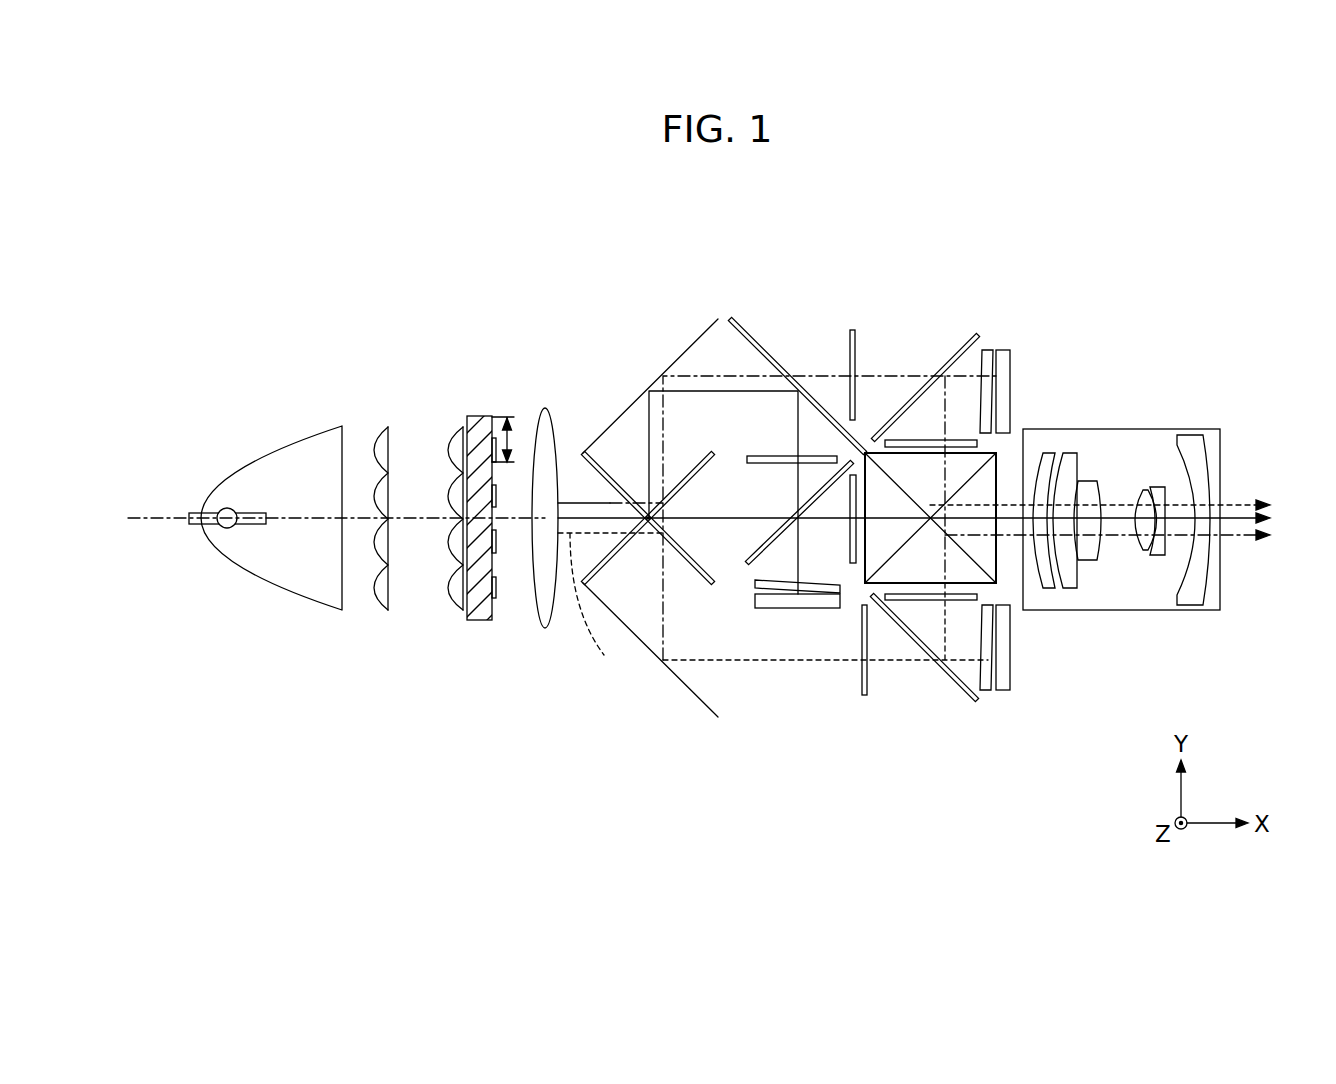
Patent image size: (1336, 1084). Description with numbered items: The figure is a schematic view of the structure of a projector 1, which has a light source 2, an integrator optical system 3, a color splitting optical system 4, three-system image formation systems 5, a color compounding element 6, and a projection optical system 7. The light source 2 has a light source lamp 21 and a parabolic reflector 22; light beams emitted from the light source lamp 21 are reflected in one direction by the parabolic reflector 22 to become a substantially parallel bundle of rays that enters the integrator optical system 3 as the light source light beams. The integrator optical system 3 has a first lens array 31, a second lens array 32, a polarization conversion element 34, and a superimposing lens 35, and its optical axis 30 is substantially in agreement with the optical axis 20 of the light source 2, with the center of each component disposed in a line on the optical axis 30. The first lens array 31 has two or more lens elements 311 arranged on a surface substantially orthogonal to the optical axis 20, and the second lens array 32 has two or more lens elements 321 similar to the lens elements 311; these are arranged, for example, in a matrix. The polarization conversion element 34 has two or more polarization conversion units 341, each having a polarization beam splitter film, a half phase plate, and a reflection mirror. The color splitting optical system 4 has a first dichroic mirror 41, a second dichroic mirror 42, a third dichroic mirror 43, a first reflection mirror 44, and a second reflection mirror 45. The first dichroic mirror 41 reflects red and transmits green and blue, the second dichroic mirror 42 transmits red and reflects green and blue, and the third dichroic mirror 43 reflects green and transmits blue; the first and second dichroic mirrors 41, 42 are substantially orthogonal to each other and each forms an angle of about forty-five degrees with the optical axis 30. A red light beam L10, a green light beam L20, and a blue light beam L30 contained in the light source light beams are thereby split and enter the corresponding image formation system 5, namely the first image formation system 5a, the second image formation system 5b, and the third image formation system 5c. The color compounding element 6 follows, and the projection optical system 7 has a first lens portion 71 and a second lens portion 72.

The projector 1 is at (1098, 235).
The light source 2 is at (265, 514).
The optical axis of the light source 20 is at (155, 512).
The light source lamp 21 is at (226, 525).
The parabolic reflector 22 is at (284, 598).
The integrator optical system 3 is at (452, 524).
The optical axis of the integrator optical system 30 is at (409, 517).
The first lens array 31 is at (364, 517).
The lens elements 311 is at (378, 453).
The second lens array 32 is at (439, 517).
The lens elements 321 is at (450, 452).
The polarization conversion element 34 is at (492, 505).
The polarization conversion units 341 is at (513, 437).
The superimposing lens 35 is at (548, 544).
The color splitting optical system 4 is at (723, 487).
The first dichroic mirror 41 is at (688, 568).
The second dichroic mirror 42 is at (690, 470).
The third dichroic mirror 43 is at (757, 346).
The first reflection mirror 44 is at (680, 697).
The second reflection mirror 45 is at (688, 352).
The image formation systems 5 is at (843, 519).
The first image formation system 5a is at (923, 688).
The second image formation system 5b is at (780, 512).
The third image formation system 5c is at (922, 356).
The color compounding element 6 is at (985, 478).
The projection optical system 7 is at (1121, 566).
The first lens portion 71 is at (1108, 618).
The second lens portion 72 is at (1167, 547).
The red light beam L10 is at (773, 610).
The green light beam L20 is at (572, 518).
The blue light beam L30 is at (610, 503).